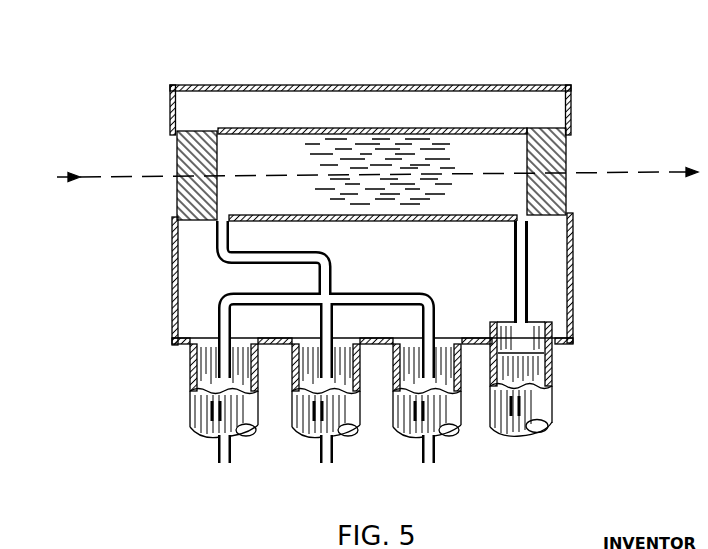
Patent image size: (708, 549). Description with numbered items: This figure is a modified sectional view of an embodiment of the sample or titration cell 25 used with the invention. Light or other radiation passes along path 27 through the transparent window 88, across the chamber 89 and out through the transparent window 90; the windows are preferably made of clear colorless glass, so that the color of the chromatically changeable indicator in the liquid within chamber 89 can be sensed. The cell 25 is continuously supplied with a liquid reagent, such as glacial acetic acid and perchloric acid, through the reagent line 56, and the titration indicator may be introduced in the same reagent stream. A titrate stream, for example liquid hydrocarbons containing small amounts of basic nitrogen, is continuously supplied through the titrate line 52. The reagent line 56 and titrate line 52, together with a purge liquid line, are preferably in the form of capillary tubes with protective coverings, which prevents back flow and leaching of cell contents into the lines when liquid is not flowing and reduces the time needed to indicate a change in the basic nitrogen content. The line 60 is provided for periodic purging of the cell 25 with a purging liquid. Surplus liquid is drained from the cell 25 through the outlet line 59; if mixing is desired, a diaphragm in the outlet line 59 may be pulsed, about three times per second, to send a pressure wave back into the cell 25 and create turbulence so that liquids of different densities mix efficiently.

The sample cell 25 is at (278, 86).
The path 27 is at (102, 176).
The transparent window 88 is at (177, 183).
The transparent window 90 is at (567, 160).
The chamber 89 is at (290, 166).
The outlet line 59 is at (555, 410).
The reagent line 56 is at (232, 447).
The purging line 60 is at (333, 447).
The titrate line 52 is at (435, 445).